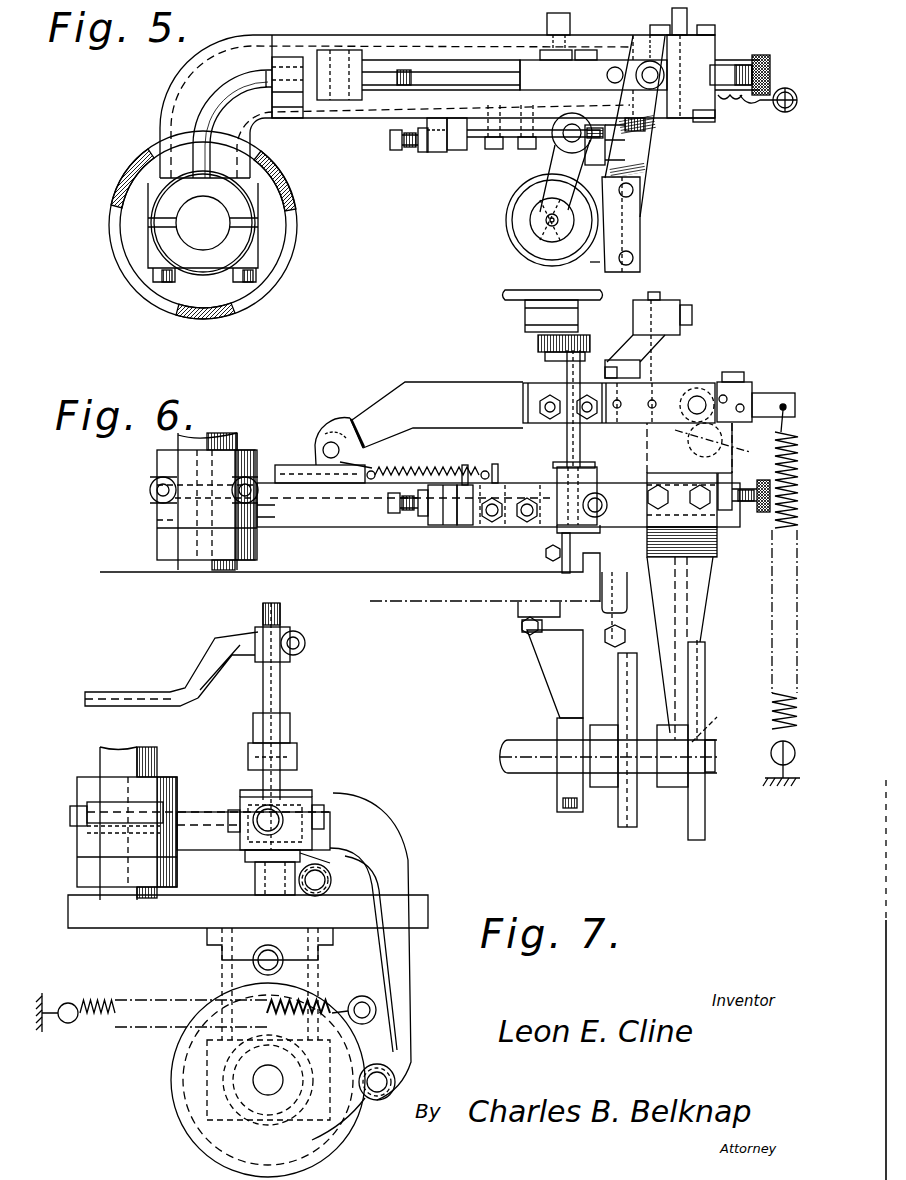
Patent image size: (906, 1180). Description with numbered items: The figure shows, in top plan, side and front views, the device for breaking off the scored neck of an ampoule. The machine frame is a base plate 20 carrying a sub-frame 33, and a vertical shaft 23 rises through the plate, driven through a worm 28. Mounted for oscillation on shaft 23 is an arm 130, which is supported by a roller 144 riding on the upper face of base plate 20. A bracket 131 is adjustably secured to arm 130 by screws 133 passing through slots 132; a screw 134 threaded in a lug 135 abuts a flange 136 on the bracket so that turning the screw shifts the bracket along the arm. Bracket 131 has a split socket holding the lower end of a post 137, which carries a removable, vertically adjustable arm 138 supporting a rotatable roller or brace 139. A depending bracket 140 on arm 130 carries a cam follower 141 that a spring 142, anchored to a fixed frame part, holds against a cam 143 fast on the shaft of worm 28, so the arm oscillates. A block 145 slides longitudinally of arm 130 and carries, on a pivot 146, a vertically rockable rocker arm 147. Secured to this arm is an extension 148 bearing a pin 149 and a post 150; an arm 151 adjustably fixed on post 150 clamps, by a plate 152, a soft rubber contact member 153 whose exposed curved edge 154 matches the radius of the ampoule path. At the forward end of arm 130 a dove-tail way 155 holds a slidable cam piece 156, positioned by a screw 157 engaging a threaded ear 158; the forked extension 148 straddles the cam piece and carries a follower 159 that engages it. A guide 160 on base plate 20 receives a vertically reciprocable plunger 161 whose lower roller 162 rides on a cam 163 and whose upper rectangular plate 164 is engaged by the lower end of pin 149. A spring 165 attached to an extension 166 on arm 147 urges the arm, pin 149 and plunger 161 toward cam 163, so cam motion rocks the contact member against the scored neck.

In FIG. 6, the base plate 20 is at (475, 601).
In FIG. 7, the base plate 20 is at (425, 897).
In FIG. 5, the vertical shaft 23 is at (203, 245).
In FIG. 6, the vertical shaft 23 is at (232, 438).
In FIG. 7, the vertical shaft 23 is at (162, 760).
In FIG. 6, the worm 28 is at (523, 742).
In FIG. 7, the worm 28 is at (255, 1085).
In FIG. 5, the sub-frame 33 is at (262, 292).
In FIG. 5, the arm 130 is at (345, 120).
In FIG. 6, the arm 130 is at (323, 520).
In FIG. 7, the arm 130 is at (232, 845).
In FIG. 6, the bracket 131 is at (556, 549).
In FIG. 6, the slots 132 is at (521, 500).
In FIG. 5, the screws 133 is at (495, 142).
In FIG. 6, the screws 133 is at (525, 522).
In FIG. 5, the screw 134 is at (405, 148).
In FIG. 6, the screw 134 is at (395, 522).
In FIG. 5, the lug 135 is at (437, 150).
In FIG. 6, the lug 135 is at (437, 525).
In FIG. 5, the flange 136 is at (462, 157).
In FIG. 6, the flange 136 is at (465, 482).
In FIG. 5, the post 137 is at (612, 140).
In FIG. 6, the post 137 is at (582, 452).
In FIG. 5, the arm 138 is at (610, 152).
In FIG. 6, the arm 138 is at (587, 330).
In FIG. 5, the roller or brace 139 is at (520, 222).
In FIG. 6, the depending bracket 140 is at (703, 590).
In FIG. 7, the depending bracket 140 is at (409, 856).
In FIG. 6, the cam follower 141 is at (706, 735).
In FIG. 7, the cam follower 141 is at (396, 1081).
In FIG. 7, the spring 142 is at (206, 1004).
In FIG. 6, the cam 143 is at (706, 812).
In FIG. 7, the cam 143 is at (175, 1052).
In FIG. 5, the roller 144 is at (545, 18).
In FIG. 6, the roller 144 is at (560, 577).
In FIG. 7, the roller 144 is at (322, 866).
In FIG. 5, the block 145 is at (287, 100).
In FIG. 6, the block 145 is at (290, 465).
In FIG. 6, the pivot 146 is at (345, 447).
In FIG. 5, the rocker arm 147 is at (382, 78).
In FIG. 6, the rocker arm 147 is at (437, 392).
In FIG. 5, the extension 148 is at (615, 66).
In FIG. 6, the extension 148 is at (683, 395).
In FIG. 5, the pin 149 is at (650, 62).
In FIG. 6, the pin 149 is at (698, 422).
In FIG. 6, the post 150 is at (690, 330).
In FIG. 5, the arm 151 is at (650, 195).
In FIG. 6, the arm 151 is at (655, 322).
In FIG. 7, the arm 151 is at (205, 647).
In FIG. 5, the plate 152 is at (635, 236).
In FIG. 6, the plate 152 is at (568, 345).
In FIG. 7, the plate 152 is at (100, 692).
In FIG. 5, the contact member 153 is at (605, 258).
In FIG. 6, the contact member 153 is at (600, 369).
In FIG. 5, the curved edge 154 is at (600, 263).
In FIG. 7, the dove-tail way 155 is at (300, 800).
In FIG. 5, the cam piece 156 is at (725, 70).
In FIG. 6, the cam piece 156 is at (744, 382).
In FIG. 7, the cam piece 156 is at (282, 708).
In FIG. 5, the screw 157 is at (748, 72).
In FIG. 6, the screw 157 is at (743, 490).
In FIG. 7, the screw 157 is at (252, 828).
In FIG. 6, the threaded ear 158 is at (760, 512).
In FIG. 5, the follower 159 is at (683, 92).
In FIG. 6, the follower 159 is at (738, 384).
In FIG. 6, the guide 160 is at (690, 604).
In FIG. 6, the plunger 161 is at (690, 556).
In FIG. 7, the plunger 161 is at (260, 888).
In FIG. 6, the roller 162 is at (590, 661).
In FIG. 7, the roller 162 is at (253, 963).
In FIG. 6, the cam 163 is at (625, 693).
In FIG. 7, the cam 163 is at (338, 1122).
In FIG. 6, the plate 164 is at (718, 535).
In FIG. 7, the plate 164 is at (250, 862).
In FIG. 5, the spring 165 is at (780, 113).
In FIG. 6, the spring 165 is at (772, 712).
In FIG. 5, the extension 166 is at (745, 111).
In FIG. 6, the extension 166 is at (775, 390).